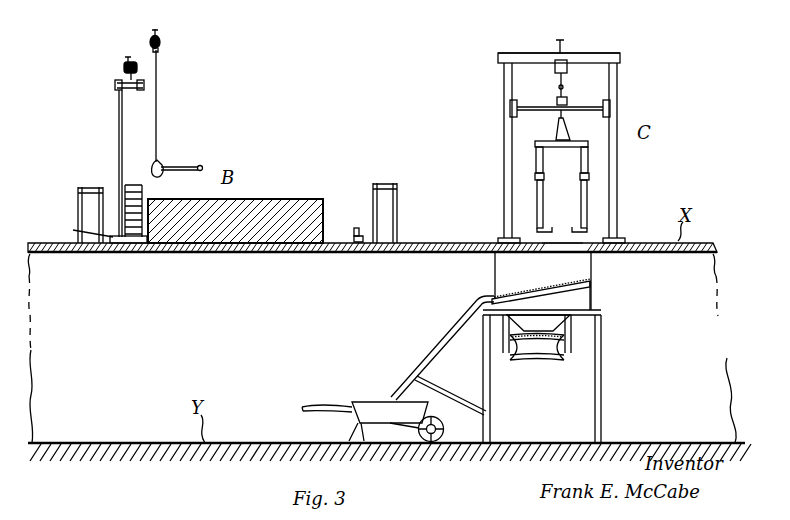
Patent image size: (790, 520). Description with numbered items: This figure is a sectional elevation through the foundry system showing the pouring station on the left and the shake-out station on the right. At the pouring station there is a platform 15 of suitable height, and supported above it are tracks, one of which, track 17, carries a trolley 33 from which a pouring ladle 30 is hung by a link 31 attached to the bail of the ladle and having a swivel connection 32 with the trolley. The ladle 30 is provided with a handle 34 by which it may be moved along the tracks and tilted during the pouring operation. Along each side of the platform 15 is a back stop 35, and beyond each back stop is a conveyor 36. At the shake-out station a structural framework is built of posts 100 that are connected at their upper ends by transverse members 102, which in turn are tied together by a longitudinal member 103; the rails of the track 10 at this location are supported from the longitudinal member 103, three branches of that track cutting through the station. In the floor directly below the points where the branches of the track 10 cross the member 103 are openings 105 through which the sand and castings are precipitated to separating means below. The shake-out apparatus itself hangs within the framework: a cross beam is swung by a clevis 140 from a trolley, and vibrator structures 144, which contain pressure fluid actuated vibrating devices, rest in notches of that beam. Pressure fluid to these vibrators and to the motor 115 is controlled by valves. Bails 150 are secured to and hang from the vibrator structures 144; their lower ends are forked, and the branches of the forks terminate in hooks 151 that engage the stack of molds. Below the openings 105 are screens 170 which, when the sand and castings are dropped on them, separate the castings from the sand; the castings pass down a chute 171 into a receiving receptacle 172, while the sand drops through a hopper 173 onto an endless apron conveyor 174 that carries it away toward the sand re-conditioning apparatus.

The track 10 is at (126, 63).
The platform 15 is at (276, 207).
The track 17 is at (158, 34).
The pouring ladle 30 is at (163, 162).
The link 31 is at (158, 99).
The swivel connection 32 is at (160, 53).
The trolley 33 is at (161, 44).
The handle 34 is at (199, 165).
The back stop 35 is at (363, 200).
The conveyor 36 is at (92, 187).
The post 100 is at (505, 192).
The transverse member 102 is at (599, 53).
The longitudinal member 103 is at (563, 40).
The opening 105 is at (550, 254).
The motor 115 is at (567, 68).
The clevis 140 is at (565, 128).
The vibrator structure 144 is at (581, 162).
The bail 150 is at (581, 194).
The hook 151 is at (582, 229).
The screen 170 is at (518, 290).
The chute 171 is at (457, 323).
The receiving receptacle 172 is at (381, 400).
The hopper 173 is at (560, 300).
The endless apron conveyor 174 is at (541, 360).